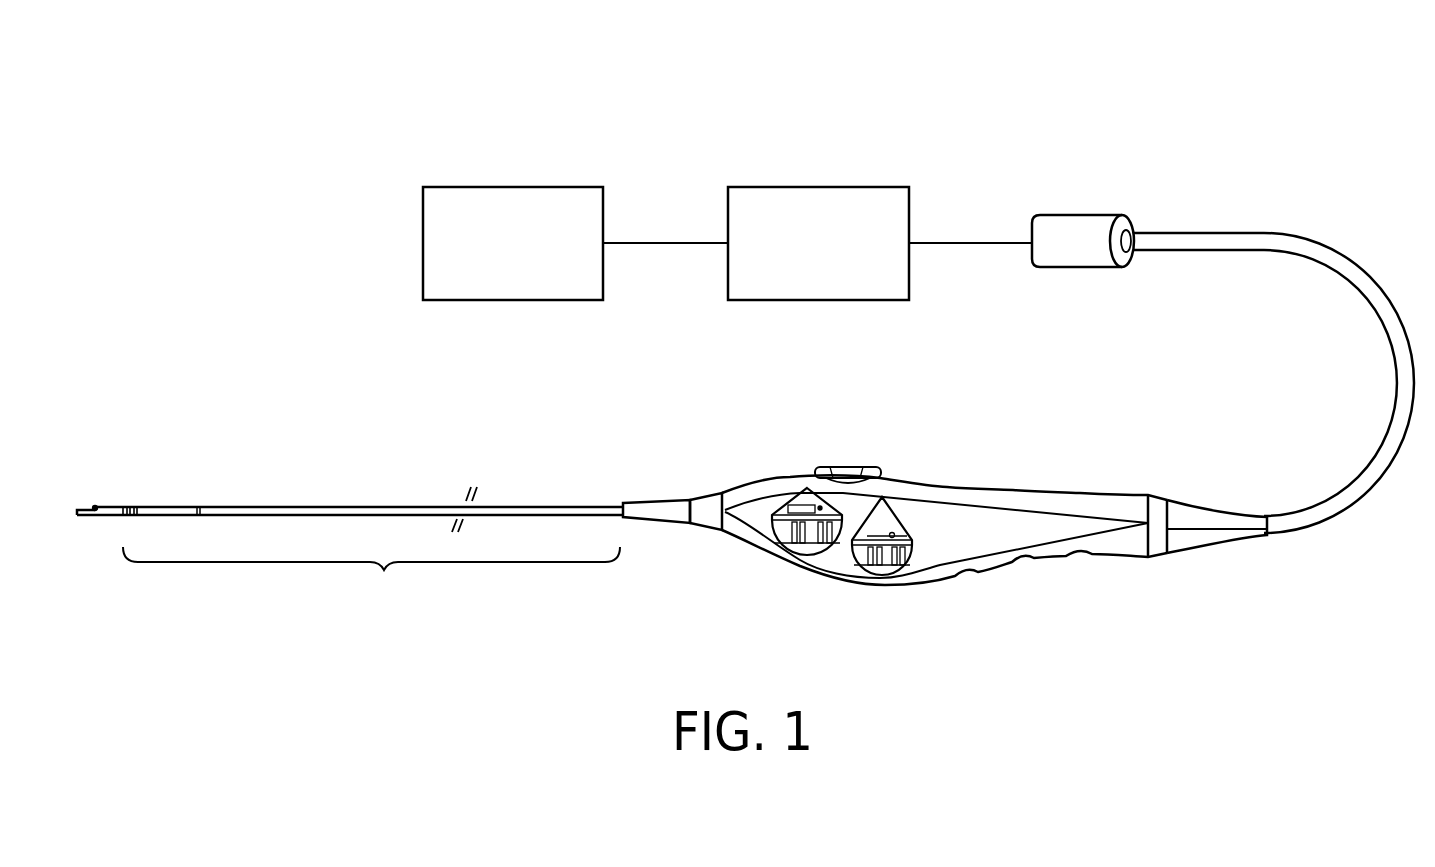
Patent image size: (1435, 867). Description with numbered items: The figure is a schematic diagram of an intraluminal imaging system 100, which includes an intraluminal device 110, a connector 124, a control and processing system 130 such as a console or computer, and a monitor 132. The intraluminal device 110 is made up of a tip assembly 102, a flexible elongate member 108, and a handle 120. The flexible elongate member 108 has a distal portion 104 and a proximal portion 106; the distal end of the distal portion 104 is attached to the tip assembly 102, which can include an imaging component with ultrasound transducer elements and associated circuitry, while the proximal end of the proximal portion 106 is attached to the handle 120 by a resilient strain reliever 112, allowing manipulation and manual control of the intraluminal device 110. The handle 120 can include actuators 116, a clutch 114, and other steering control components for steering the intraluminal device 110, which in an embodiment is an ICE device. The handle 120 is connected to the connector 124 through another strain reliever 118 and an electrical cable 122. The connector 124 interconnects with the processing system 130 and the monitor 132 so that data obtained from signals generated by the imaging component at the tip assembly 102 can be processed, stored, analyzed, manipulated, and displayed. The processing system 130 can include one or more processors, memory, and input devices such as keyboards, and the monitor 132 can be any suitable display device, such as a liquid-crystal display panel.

The intraluminal imaging system 100 is at (1160, 97).
The tip assembly 102 is at (112, 505).
The distal portion 104 is at (176, 505).
The proximal portion 106 is at (369, 505).
The flexible elongate member 108 is at (371, 578).
The intraluminal device 110 is at (575, 432).
The resilient strain reliever 112 is at (651, 505).
The clutch 114 is at (847, 467).
The actuators 116 is at (842, 527).
The strain reliever 118 is at (1216, 532).
The handle 120 is at (1120, 493).
The electrical cable 122 is at (1313, 506).
The connector 124 is at (1084, 215).
The processing system 130 is at (824, 187).
The monitor 132 is at (514, 187).